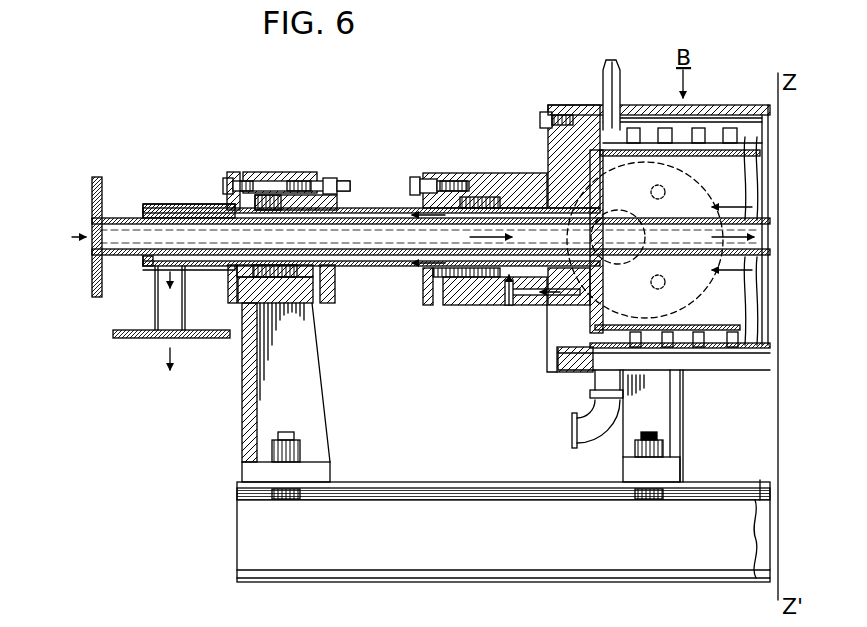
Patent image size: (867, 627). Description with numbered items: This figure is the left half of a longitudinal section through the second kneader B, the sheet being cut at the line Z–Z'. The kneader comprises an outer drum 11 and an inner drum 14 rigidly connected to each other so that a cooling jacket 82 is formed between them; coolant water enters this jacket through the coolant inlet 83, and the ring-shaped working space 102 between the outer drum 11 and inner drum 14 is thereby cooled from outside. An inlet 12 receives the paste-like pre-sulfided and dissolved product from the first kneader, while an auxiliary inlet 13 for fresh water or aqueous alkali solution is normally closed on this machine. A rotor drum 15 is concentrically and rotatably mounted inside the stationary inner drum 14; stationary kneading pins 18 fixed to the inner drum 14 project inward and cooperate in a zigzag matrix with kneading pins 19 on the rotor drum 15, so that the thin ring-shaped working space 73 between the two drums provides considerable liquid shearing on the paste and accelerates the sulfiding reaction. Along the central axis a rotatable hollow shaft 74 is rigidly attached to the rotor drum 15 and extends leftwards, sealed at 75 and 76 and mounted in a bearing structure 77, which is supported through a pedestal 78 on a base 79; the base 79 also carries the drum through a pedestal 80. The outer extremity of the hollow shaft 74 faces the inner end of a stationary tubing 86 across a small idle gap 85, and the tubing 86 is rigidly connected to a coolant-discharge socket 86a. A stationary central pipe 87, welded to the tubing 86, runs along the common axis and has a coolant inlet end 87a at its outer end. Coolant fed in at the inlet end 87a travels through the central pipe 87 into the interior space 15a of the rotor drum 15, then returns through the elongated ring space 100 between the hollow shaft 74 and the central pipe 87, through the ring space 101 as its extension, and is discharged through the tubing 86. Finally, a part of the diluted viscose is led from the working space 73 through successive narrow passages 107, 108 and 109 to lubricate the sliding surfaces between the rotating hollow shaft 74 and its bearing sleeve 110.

The outer drum 11 is at (753, 106).
The inlet 12 is at (645, 240).
The auxiliary inlet 13 is at (602, 70).
The inner drum 14 is at (716, 130).
The rotor drum 15 is at (762, 157).
The interior space of drum rotor 15a is at (730, 297).
The kneading pins 18 is at (720, 347).
The kneading pins 19 is at (696, 333).
The ring-shaped working space 73 is at (748, 346).
The rotatable hollow shaft 74 is at (373, 208).
The seal 75 is at (472, 203).
The seal 76 is at (282, 196).
The bearing structure 77 is at (293, 300).
The pedestal 78 is at (314, 412).
The base 79 is at (418, 512).
The pedestal 80 is at (678, 430).
The cooling jacket 82 is at (650, 120).
The coolant inlet 83 is at (604, 432).
The idle gap 85 is at (228, 210).
The stationary tubing 86 is at (216, 268).
The coolant-discharge socket 86a is at (192, 338).
The central pipe 87 is at (398, 262).
The coolant inlet end 87a is at (92, 246).
The ring space 100 is at (353, 266).
The ring space 101 is at (148, 262).
The ring-shaped working space 102 is at (582, 372).
The narrow passage 107 is at (549, 347).
The narrow passage 108 is at (553, 294).
The narrow passage 109 is at (506, 288).
The bearing sleeve 110 is at (533, 204).